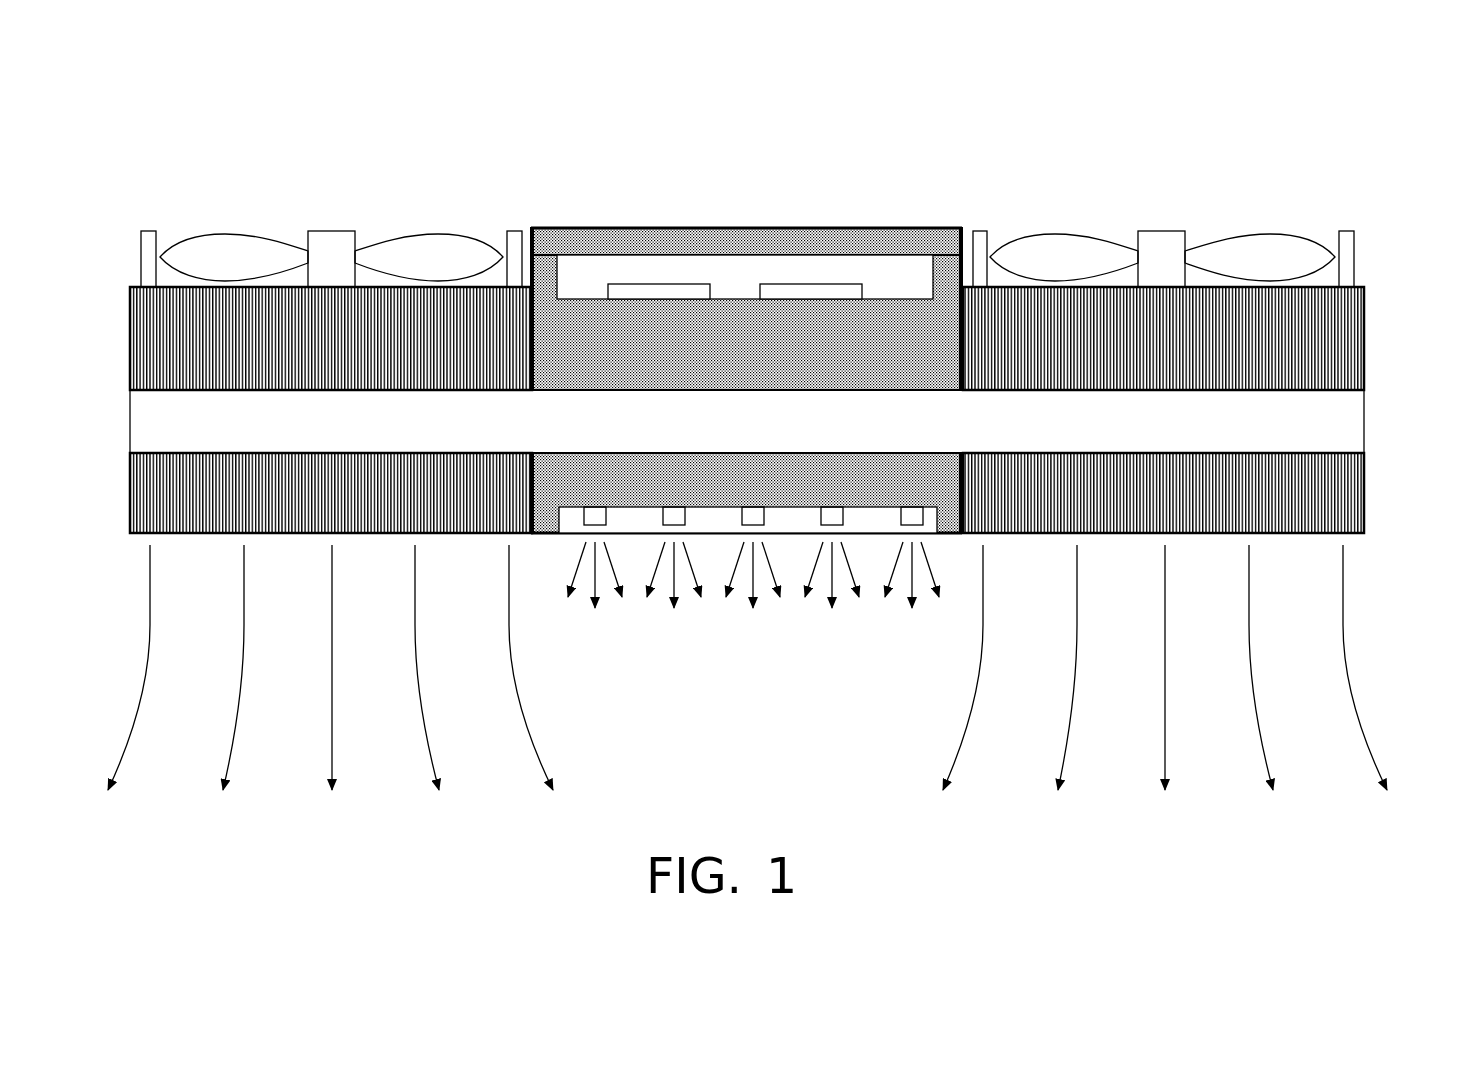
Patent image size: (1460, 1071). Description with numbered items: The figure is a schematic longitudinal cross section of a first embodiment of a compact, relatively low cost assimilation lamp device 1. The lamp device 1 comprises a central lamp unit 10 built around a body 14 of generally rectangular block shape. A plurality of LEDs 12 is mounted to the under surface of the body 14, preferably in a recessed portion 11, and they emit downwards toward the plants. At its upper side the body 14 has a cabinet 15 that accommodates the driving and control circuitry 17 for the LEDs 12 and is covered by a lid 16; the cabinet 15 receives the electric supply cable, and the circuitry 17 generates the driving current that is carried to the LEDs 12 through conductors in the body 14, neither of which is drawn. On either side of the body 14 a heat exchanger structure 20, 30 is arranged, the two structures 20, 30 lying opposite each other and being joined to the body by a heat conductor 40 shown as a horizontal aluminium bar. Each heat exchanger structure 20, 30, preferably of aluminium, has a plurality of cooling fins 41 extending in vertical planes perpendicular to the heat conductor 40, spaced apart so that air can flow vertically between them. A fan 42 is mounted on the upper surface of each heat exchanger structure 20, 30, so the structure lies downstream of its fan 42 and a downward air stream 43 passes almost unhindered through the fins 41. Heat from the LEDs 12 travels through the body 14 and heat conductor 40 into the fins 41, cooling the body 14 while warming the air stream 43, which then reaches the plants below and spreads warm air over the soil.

The assimilation lamp device 1 is at (350, 133).
The central lamp unit 10 is at (746, 362).
The recessed portion 11 is at (873, 521).
The LEDs 12 is at (608, 517).
The body 14 is at (897, 368).
The cabinet 15 is at (586, 276).
The lid 16 is at (807, 241).
The driving and control circuitry 17 is at (773, 284).
The heat exchanger structure 20 is at (1203, 410).
The heat exchanger structure 30 is at (128, 355).
The heat conductor 40 is at (1328, 424).
The cooling fins 41 is at (1328, 494).
The fan 42 is at (1094, 236).
The downward air stream 43 is at (760, 667).